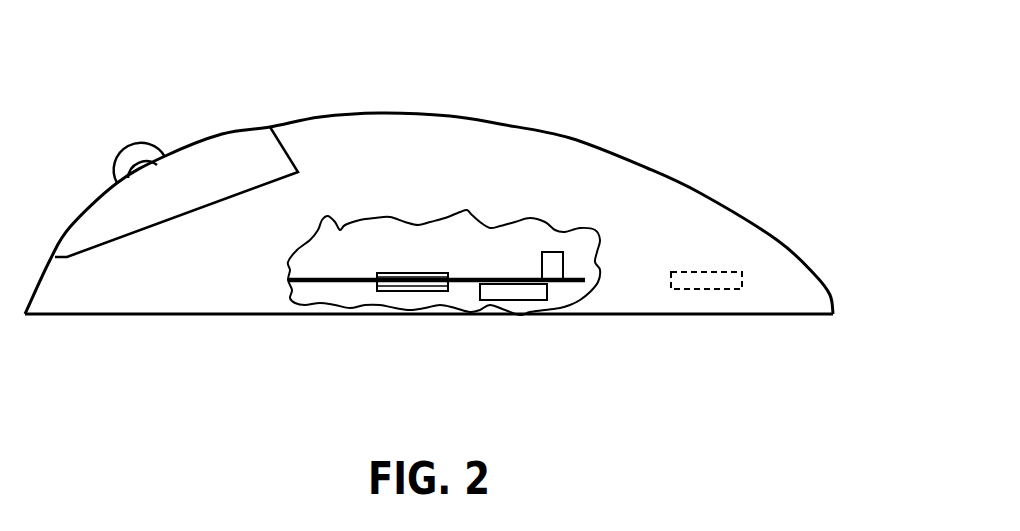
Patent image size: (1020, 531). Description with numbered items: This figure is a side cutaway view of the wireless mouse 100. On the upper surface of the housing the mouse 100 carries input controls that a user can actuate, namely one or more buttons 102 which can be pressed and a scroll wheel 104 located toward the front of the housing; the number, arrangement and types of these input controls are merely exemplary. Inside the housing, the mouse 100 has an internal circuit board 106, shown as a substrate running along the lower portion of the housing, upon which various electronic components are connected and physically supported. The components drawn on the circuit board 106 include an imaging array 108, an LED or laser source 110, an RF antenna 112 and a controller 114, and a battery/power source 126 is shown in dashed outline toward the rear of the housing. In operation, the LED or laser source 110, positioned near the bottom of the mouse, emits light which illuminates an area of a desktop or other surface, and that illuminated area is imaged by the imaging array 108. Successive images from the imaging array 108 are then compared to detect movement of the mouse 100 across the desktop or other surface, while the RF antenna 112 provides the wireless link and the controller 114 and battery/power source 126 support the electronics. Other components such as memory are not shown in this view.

The mouse 100 is at (647, 168).
The buttons 102 is at (222, 134).
The scroll wheel 104 is at (147, 152).
The internal circuit board 106 is at (335, 280).
The imaging array 108 is at (400, 290).
The LED or laser source 110 is at (537, 300).
The RF antenna 112 is at (560, 252).
The controller 114 is at (432, 273).
The battery/power source 126 is at (723, 272).